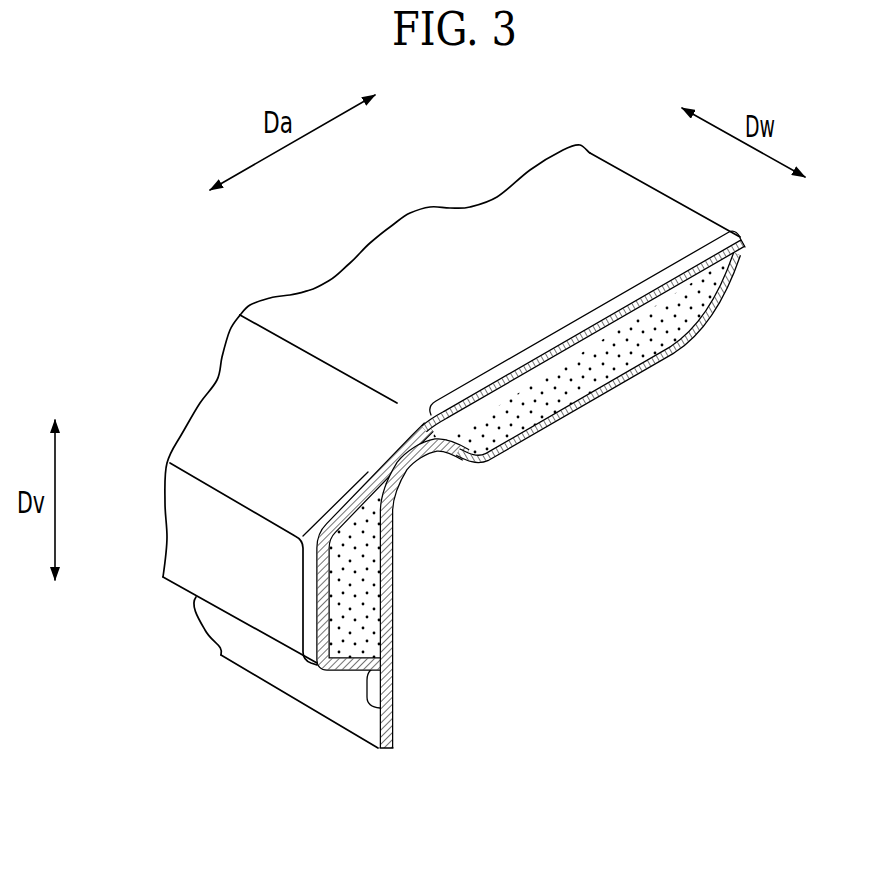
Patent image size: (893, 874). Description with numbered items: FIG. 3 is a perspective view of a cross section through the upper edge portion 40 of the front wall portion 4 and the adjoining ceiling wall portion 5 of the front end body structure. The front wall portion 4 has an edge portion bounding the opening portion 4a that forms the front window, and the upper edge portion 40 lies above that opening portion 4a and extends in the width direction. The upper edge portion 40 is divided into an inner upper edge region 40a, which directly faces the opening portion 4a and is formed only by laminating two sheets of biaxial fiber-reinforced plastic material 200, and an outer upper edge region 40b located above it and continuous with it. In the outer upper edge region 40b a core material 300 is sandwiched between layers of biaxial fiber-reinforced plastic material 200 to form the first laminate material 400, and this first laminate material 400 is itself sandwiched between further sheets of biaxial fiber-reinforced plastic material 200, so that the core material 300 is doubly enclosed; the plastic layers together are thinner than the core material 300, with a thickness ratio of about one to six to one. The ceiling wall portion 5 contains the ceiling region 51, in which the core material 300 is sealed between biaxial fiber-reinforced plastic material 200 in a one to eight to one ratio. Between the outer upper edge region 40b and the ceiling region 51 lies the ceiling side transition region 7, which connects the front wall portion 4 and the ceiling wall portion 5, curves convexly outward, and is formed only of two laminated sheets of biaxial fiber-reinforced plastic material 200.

The front wall portion 4 is at (200, 445).
The opening portion 4a is at (243, 673).
The ceiling wall portion 5 is at (585, 234).
The ceiling side transition region 7 is at (417, 418).
The upper edge portion 40 is at (295, 713).
The inner upper edge region 40a is at (367, 704).
The outer upper edge region 40b is at (303, 585).
The ceiling region 51 is at (581, 316).
The biaxial fiber-reinforced plastic material 200 is at (387, 555).
The core material 300 is at (644, 344).
The first laminate material 400 is at (534, 540).